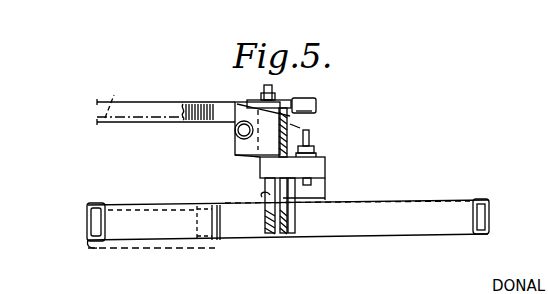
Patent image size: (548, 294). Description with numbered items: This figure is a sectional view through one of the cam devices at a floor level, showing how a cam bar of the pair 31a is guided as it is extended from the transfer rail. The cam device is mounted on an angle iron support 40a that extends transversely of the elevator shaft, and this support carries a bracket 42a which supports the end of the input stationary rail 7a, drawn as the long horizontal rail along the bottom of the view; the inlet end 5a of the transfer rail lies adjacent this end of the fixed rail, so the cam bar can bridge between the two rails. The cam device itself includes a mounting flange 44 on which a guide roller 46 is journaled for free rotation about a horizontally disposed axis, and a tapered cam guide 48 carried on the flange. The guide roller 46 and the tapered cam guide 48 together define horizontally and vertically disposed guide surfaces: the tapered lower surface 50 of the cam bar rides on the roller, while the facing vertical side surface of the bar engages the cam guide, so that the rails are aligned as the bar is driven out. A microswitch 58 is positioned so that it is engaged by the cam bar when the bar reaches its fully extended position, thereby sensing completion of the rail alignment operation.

The inlet end of transfer rail 5a is at (151, 205).
The input stationary rail 7a is at (400, 233).
The cam bar pair 31a is at (185, 101).
The angle iron support 40a is at (302, 130).
The bracket 42a is at (283, 197).
The mounting flange 44 is at (250, 158).
The guide roller 46 is at (234, 137).
The tapered cam guide 48 is at (257, 98).
The tapered lower surface 50 is at (300, 128).
The microswitch 58 is at (317, 106).